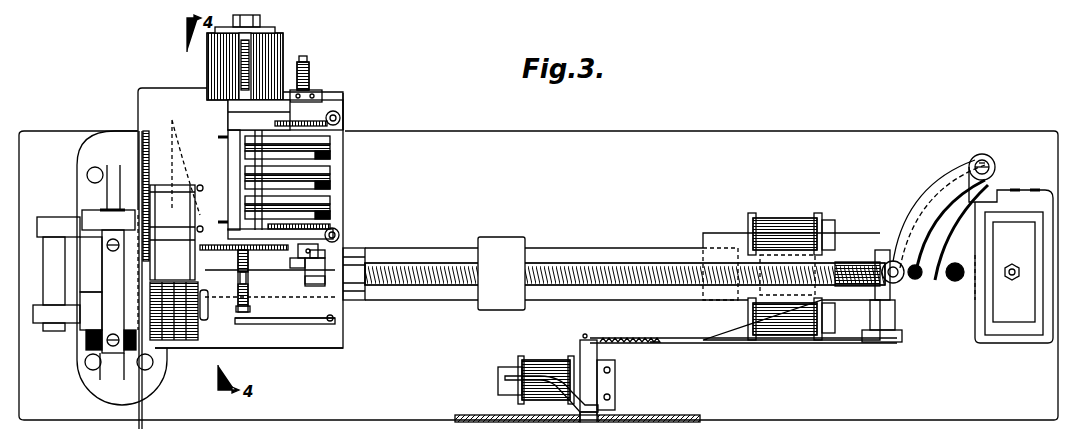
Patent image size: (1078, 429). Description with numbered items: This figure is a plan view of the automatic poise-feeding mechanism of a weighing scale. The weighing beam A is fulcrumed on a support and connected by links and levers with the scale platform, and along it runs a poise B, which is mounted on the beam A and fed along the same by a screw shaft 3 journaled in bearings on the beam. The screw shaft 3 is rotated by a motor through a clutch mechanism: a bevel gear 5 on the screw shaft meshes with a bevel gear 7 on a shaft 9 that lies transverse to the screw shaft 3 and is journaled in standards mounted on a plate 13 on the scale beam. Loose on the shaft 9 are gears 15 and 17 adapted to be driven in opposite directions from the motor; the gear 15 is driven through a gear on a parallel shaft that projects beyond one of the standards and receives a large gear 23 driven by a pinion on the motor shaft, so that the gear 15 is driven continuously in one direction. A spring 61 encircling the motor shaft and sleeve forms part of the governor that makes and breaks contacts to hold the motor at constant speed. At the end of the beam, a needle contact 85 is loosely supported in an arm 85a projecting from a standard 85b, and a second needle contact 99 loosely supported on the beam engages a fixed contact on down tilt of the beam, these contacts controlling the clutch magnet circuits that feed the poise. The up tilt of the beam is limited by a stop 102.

The screw shaft 3 is at (413, 262).
The weighing beam A is at (616, 252).
The poise B is at (495, 246).
The bevel gear 5 is at (312, 280).
The bevel gear 7 is at (291, 265).
The shaft 9 is at (310, 252).
The plate 13 is at (215, 340).
The gear 15 is at (339, 229).
The gear 17 is at (343, 134).
The large gear 23 is at (244, 258).
The spring 61 is at (236, 284).
The needle contact 85 is at (925, 268).
The arm 85a is at (920, 232).
The standard 85b is at (996, 172).
The needle contact 99 is at (957, 283).
The stop 102 is at (891, 262).